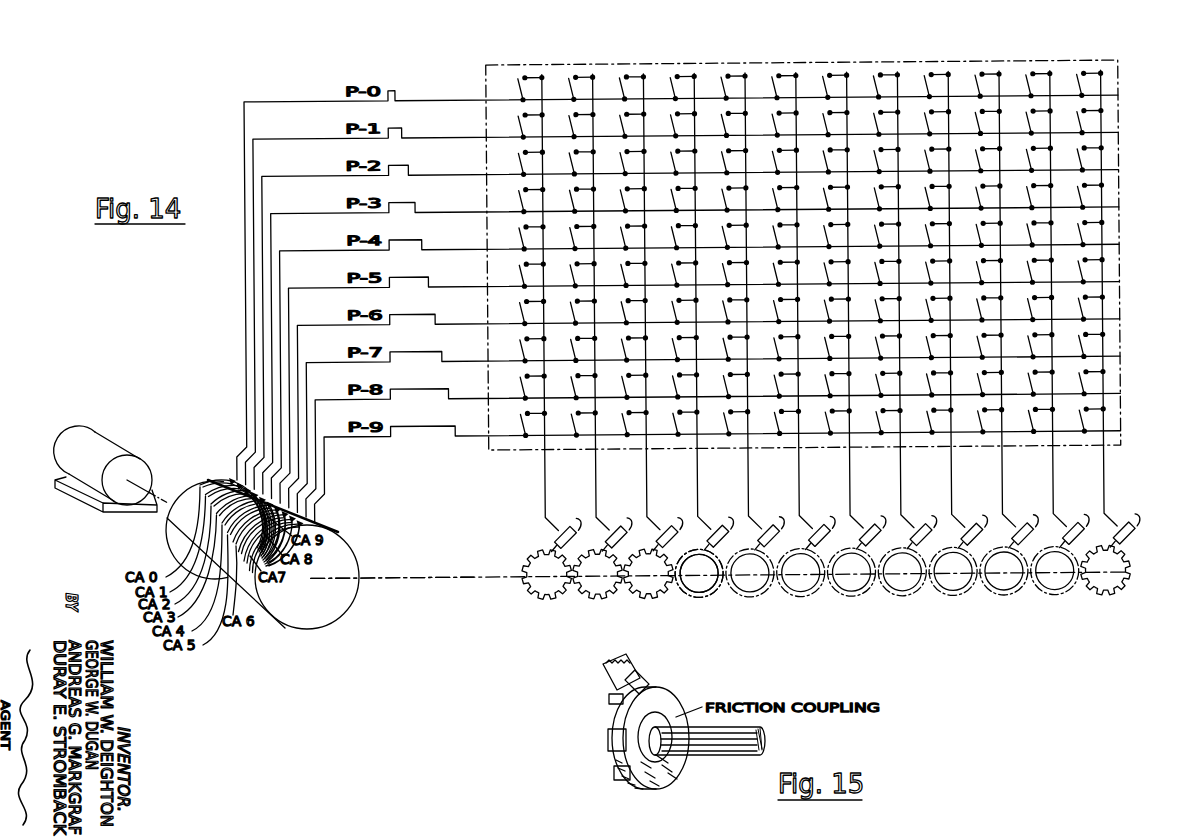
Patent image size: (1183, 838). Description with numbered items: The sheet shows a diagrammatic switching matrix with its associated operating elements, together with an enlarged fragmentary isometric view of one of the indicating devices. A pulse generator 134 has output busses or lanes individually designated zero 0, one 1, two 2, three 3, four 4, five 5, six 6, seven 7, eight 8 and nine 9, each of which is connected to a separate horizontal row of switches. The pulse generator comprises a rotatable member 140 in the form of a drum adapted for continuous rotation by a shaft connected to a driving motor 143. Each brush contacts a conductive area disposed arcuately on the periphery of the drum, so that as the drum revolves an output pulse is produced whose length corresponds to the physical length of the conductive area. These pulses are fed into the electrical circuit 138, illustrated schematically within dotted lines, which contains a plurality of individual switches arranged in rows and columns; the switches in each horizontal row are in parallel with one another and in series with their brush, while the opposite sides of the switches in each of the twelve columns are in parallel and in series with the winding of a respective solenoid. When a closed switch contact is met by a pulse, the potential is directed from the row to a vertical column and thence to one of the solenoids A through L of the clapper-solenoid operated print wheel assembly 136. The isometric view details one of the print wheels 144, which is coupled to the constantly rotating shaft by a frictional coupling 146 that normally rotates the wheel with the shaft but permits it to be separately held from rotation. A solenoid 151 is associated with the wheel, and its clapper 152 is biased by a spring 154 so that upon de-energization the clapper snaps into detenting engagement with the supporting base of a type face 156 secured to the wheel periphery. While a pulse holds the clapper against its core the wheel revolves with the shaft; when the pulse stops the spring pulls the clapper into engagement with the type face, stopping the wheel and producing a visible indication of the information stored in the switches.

In FIG. 14, the output bus 0 is at (244, 100).
In FIG. 14, the output bus 1 is at (253, 137).
In FIG. 14, the output bus 2 is at (261, 175).
In FIG. 14, the output bus 3 is at (270, 212).
In FIG. 14, the output bus 4 is at (278, 249).
In FIG. 14, the output bus 5 is at (287, 286).
In FIG. 14, the output bus 6 is at (296, 324).
In FIG. 14, the output bus 7 is at (304, 361).
In FIG. 14, the output bus 8 is at (313, 398).
In FIG. 14, the output bus 9 is at (321, 436).
In FIG. 14, the pulse generator 134 is at (244, 570).
In FIG. 14, the print wheel assembly 136 is at (528, 599).
In FIG. 15, the print wheel assembly 136 is at (676, 688).
In FIG. 14, the electrical circuit 138 is at (1122, 409).
In FIG. 14, the rotatable member 140 is at (182, 532).
In FIG. 14, the driving motor 143 is at (59, 465).
In FIG. 14, the print wheel 144 is at (675, 598).
In FIG. 15, the print wheel 144 is at (633, 783).
In FIG. 15, the frictional coupling 146 is at (680, 768).
In FIG. 15, the solenoid 151 is at (610, 702).
In FIG. 14, the clapper 152 is at (552, 547).
In FIG. 15, the clapper 152 is at (642, 679).
In FIG. 15, the spring 154 is at (604, 668).
In FIG. 15, the type face 156 is at (609, 732).